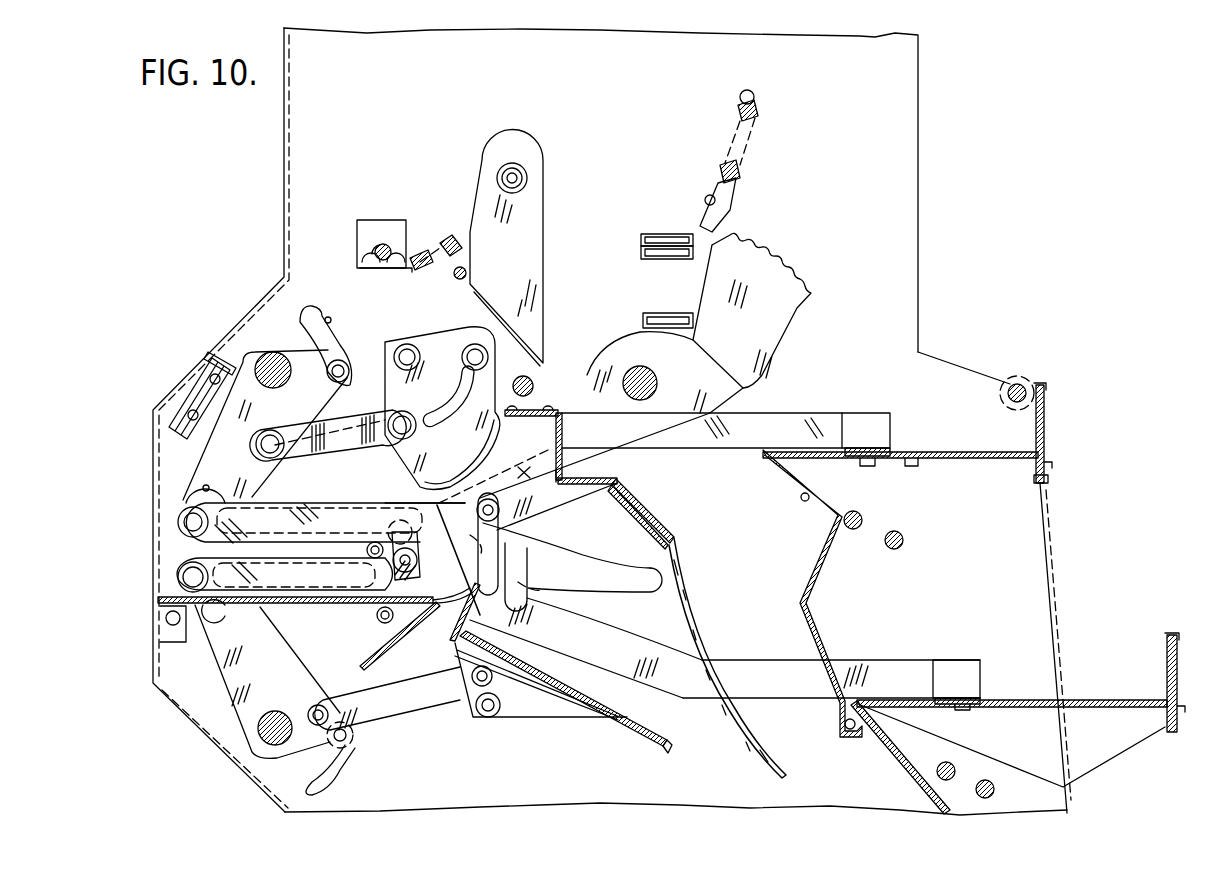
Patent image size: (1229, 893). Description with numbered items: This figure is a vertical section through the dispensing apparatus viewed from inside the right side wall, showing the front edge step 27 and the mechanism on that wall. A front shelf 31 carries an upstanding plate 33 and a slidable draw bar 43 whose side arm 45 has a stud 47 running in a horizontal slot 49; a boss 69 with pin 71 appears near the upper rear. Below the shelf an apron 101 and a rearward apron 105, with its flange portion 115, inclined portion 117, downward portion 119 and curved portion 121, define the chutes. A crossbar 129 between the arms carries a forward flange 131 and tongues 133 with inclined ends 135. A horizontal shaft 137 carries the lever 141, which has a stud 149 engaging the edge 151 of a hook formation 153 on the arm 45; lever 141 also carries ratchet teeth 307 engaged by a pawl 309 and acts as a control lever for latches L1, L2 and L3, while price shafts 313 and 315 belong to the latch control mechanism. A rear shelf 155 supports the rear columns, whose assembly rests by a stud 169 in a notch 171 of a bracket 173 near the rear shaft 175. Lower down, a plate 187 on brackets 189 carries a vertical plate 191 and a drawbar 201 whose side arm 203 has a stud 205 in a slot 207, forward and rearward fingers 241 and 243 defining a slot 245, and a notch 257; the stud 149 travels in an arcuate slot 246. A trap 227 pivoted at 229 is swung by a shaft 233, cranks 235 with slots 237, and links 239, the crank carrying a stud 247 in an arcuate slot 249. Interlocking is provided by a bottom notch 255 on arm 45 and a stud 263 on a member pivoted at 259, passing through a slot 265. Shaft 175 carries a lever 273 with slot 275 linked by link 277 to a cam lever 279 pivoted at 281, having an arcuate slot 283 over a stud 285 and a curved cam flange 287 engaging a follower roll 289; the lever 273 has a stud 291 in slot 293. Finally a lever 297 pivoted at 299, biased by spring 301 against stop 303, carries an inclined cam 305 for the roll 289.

The inclined step 27 is at (950, 363).
The horizontal shelf 31 is at (958, 456).
The upstanding vertical plate 33 is at (1047, 422).
The draw bar 43 is at (888, 440).
The side arm 45 is at (762, 420).
The stud 47 is at (192, 517).
The horizontal slot 49 is at (305, 508).
The boss 69 is at (1022, 380).
The pin 71 is at (1008, 390).
The apron 101 is at (816, 495).
The rearward apron 105 is at (700, 606).
The upper horizontal flange portion 115 is at (594, 485).
The inclined portion 117 is at (631, 503).
The downward portion 119 is at (677, 573).
The curved portion 121 is at (765, 752).
The crossbar 129 is at (562, 410).
The forward flange 131 is at (565, 437).
The tongue 133 is at (590, 477).
The inclined forward end portion 135 is at (640, 505).
The horizontal shaft 137 is at (652, 375).
The lever 141 is at (616, 344).
The stud 149 is at (499, 505).
The edge 151 is at (475, 542).
The hook formation 153 is at (545, 586).
The horizontal shelf 155 is at (285, 604).
The stud 169 is at (375, 252).
The notch 171 is at (384, 246).
The bracket 173 is at (362, 246).
The horizontal shaft 175 is at (267, 355).
The horizontal plate 187 is at (1111, 700).
The bracket 189 is at (1118, 748).
The upstanding vertical plate 191 is at (1179, 652).
The drawbar 201 is at (984, 690).
The side arm 203 is at (872, 660).
The stud 205 is at (177, 626).
The horizontal slot 207 is at (280, 562).
The trap 227 is at (632, 722).
The pivot 229 is at (480, 716).
The horizontal shaft 233 is at (257, 727).
The crank 235 is at (288, 650).
The slot 237 is at (210, 616).
The link 239 is at (390, 710).
The forward finger 241 is at (528, 568).
The rearward finger 243 is at (443, 525).
The slot 245 is at (478, 568).
The arcuate slot 246 is at (616, 566).
The stud 247 is at (354, 738).
The arcuate slot 249 is at (340, 776).
The bottom notch 255 is at (394, 530).
The notch 257 is at (377, 615).
The pivot 259 is at (367, 550).
The stud 263 is at (420, 578).
The slot 265 is at (368, 528).
The lever 273 is at (212, 448).
The slot 275 is at (210, 486).
The link 277 is at (332, 446).
The lever 279 is at (392, 393).
The pivot 281 is at (400, 346).
The arcuate slot 283 is at (456, 398).
The stud 285 is at (461, 355).
The curved flange portion 287 is at (478, 465).
The follower roll 289 is at (535, 386).
The stud 291 is at (331, 379).
The slot 293 is at (329, 317).
The lever 297 is at (538, 215).
The pivot 299 is at (512, 168).
The spring 301 is at (456, 238).
The stop 303 is at (458, 278).
The inclined triangular cam 305 is at (506, 324).
The ratchet teeth 307 is at (762, 268).
The pawl 309 is at (720, 208).
The front price shaft 313 is at (901, 546).
The rear price shaft 315 is at (860, 515).
The latch L1 is at (670, 318).
The latch L2 is at (662, 256).
The latch L3 is at (655, 237).